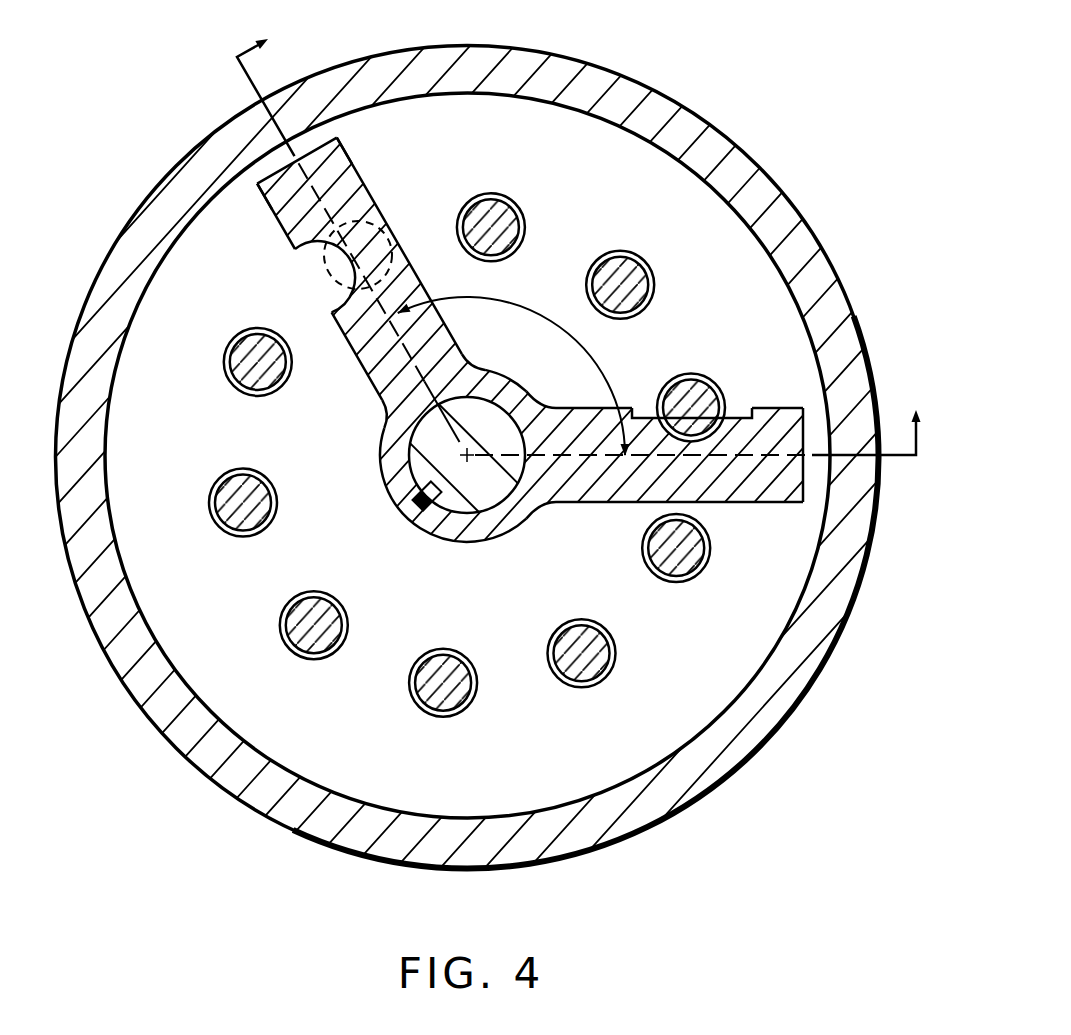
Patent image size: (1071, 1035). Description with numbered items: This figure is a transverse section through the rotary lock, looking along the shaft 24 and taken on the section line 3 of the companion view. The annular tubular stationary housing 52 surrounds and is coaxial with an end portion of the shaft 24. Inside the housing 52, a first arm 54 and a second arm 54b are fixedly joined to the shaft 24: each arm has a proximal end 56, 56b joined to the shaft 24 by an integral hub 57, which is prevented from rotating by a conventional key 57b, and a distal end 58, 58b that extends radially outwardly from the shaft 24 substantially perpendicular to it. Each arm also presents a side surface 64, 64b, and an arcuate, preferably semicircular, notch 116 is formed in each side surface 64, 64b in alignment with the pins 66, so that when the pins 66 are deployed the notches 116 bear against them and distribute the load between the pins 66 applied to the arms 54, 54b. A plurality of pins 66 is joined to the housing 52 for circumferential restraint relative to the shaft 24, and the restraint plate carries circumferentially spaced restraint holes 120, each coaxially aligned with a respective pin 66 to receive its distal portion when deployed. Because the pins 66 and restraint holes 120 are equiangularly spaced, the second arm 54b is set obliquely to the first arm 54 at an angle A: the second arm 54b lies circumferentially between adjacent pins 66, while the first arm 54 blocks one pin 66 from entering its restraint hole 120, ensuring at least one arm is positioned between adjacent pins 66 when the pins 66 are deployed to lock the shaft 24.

The stationary housing 52 is at (672, 96).
The first arm 54 is at (384, 184).
The second arm 54b is at (633, 396).
The proximal end 56 is at (383, 404).
The proximal end 56b is at (561, 505).
The hub 57 is at (434, 527).
The key 57b is at (411, 500).
The distal end 58 is at (289, 221).
The distal end 58b is at (791, 504).
The side surface 64 is at (357, 348).
The side surface 64b is at (764, 407).
The pin 66 is at (527, 232).
The notch 116 is at (303, 258).
The restraint hole 120 is at (583, 690).
The shaft 24 is at (479, 508).
The section line 3- 3 is at (591, 243).
The angle A is at (514, 369).